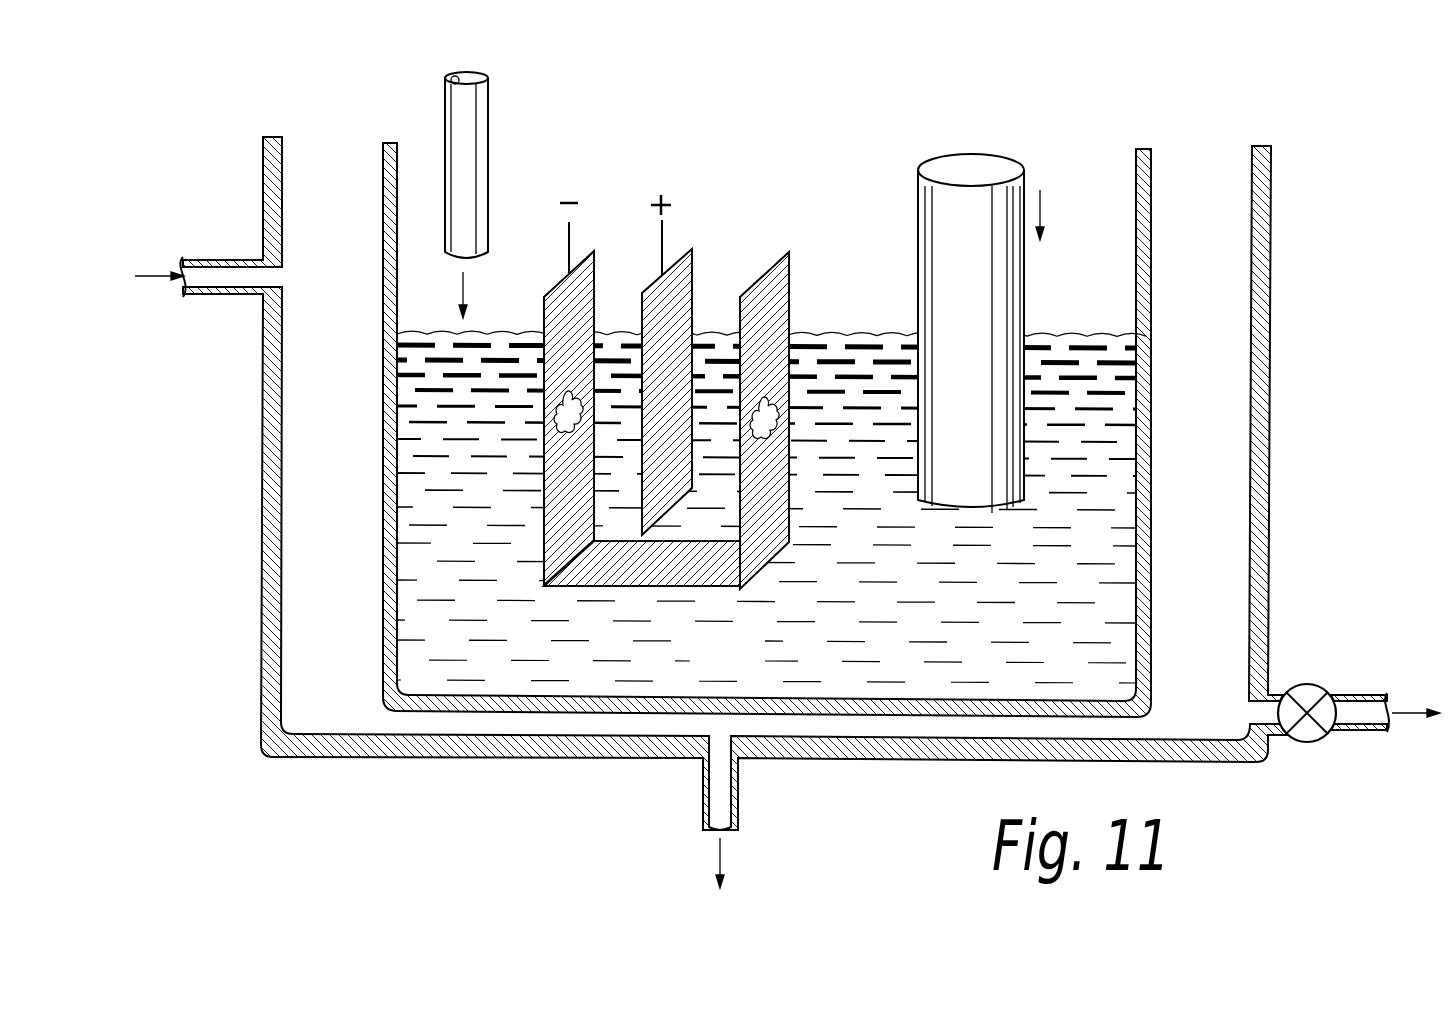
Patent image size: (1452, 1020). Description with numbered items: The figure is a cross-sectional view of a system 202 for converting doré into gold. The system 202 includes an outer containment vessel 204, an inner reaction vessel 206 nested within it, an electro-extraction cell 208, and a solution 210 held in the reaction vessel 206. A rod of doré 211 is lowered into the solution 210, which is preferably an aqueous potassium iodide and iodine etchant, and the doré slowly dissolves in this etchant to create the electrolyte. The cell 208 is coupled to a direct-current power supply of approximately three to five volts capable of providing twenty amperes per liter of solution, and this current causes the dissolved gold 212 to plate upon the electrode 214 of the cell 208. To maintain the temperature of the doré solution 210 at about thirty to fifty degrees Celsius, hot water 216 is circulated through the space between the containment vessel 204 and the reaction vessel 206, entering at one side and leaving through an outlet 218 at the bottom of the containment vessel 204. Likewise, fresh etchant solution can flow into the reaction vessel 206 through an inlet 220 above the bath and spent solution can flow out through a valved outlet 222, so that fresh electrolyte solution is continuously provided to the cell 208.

The system for converting doré to gold 202 is at (769, 424).
The containment vessel 204 is at (1270, 394).
The reaction vessel 206 is at (393, 228).
The electro-extraction cell 208 is at (665, 362).
The solution 210 is at (745, 668).
The dore anode 211 is at (938, 207).
The gold 212 is at (569, 436).
The electrode 214 is at (562, 292).
The hot water 216 is at (153, 277).
The outlet 218 is at (738, 800).
The inlet 220 is at (463, 153).
The outlet 222 is at (1362, 697).